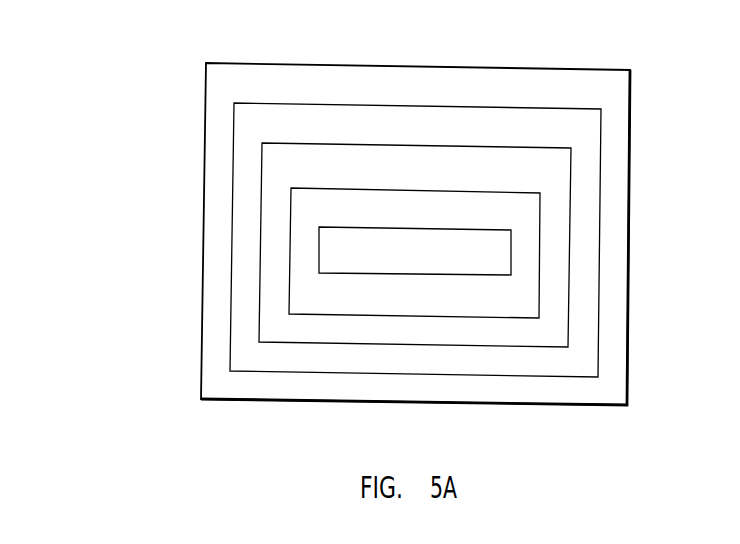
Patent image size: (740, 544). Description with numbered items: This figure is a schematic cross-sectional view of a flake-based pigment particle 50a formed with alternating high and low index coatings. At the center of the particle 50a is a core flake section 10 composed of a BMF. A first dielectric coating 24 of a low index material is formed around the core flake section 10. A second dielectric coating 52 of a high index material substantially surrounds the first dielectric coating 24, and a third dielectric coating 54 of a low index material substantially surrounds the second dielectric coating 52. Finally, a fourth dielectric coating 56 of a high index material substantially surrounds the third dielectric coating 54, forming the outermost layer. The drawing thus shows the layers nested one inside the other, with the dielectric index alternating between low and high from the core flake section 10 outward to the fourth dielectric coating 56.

The pigment particle 50a is at (357, 210).
The fourth dielectric coating 56 is at (588, 70).
The third dielectric coating 54 is at (570, 132).
The second dielectric coating 52 is at (553, 185).
The first dielectric coating 24 is at (523, 215).
The core flake section 10 is at (502, 259).